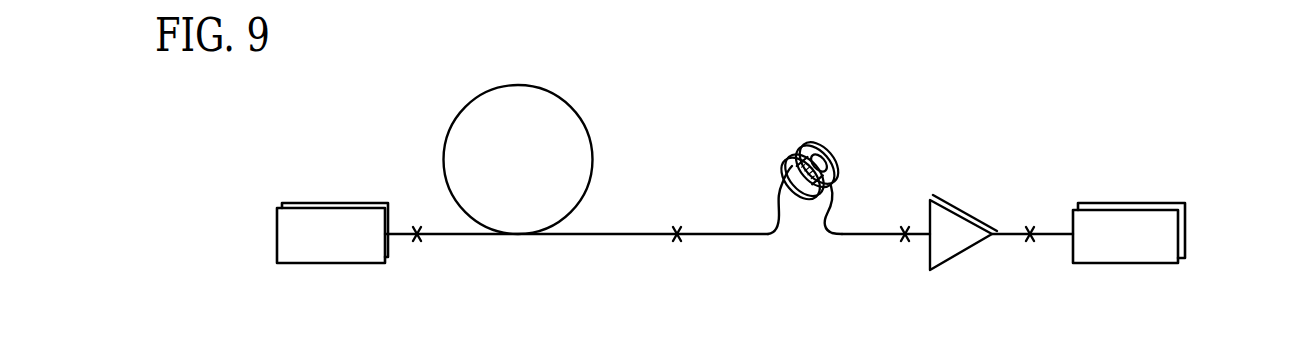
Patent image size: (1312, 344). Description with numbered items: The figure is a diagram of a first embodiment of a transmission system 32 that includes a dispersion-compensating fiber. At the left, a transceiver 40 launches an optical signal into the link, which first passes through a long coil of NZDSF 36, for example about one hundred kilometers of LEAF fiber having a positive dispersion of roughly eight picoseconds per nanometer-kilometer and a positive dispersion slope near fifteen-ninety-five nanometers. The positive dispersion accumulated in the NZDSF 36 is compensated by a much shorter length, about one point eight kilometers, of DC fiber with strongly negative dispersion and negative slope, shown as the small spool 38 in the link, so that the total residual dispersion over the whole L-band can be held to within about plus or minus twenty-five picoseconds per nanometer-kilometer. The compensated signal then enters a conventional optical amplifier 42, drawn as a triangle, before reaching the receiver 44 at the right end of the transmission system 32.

The transmission system 32 is at (744, 125).
The NZDSF 36 is at (582, 113).
The fiber spool 38 is at (845, 166).
The transceiver 40 is at (327, 207).
The optical amplifier 42 is at (964, 213).
The receiver 44 is at (1185, 222).